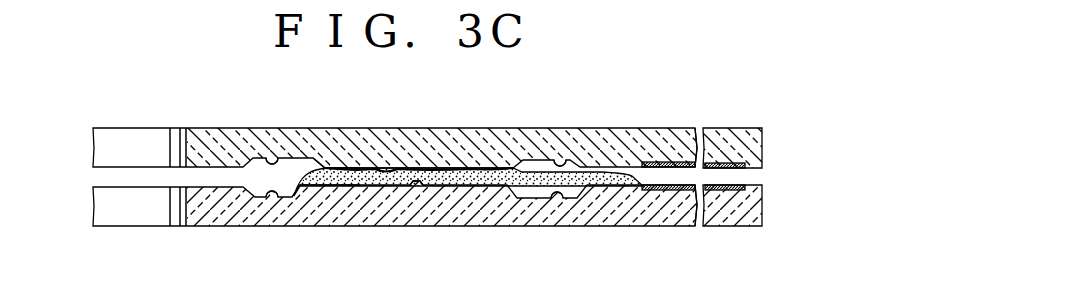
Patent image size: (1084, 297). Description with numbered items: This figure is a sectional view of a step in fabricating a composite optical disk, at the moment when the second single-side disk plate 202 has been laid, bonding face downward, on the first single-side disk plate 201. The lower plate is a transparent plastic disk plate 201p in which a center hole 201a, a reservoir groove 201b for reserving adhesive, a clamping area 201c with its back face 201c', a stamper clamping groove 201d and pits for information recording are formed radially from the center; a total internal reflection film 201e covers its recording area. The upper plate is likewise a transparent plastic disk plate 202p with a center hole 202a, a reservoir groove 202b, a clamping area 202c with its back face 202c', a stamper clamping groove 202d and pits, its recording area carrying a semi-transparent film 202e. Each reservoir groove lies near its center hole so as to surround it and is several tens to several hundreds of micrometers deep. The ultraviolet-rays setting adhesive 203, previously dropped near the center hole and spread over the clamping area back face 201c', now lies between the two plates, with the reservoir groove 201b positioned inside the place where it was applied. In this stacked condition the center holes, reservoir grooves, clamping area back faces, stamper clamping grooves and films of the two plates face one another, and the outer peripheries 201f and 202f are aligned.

The first single-side disk plate 201 is at (516, 234).
The center hole 201a is at (172, 215).
The reservoir groove 201b is at (280, 199).
The clamping area 201c is at (343, 225).
The back face of the clamping area 201c' is at (433, 223).
The stamper clamping groove 201d is at (560, 192).
The total internal reflection film 201e is at (680, 193).
The outer periphery 201f is at (762, 204).
The transparent plastic disk plate 201p is at (466, 212).
The second single-side disk plate 202 is at (509, 121).
The center hole 202a is at (180, 152).
The reservoir groove 202b is at (267, 157).
The clamping area 202c is at (343, 130).
The back face of the clamping area 202c' is at (419, 129).
The stamper clamping groove 202d is at (570, 160).
The semi-transparent film 202e is at (668, 160).
The outer periphery 202f is at (762, 141).
The transparent plastic disk plate 202p is at (624, 140).
The ultraviolet-rays setting adhesive 203 is at (544, 172).